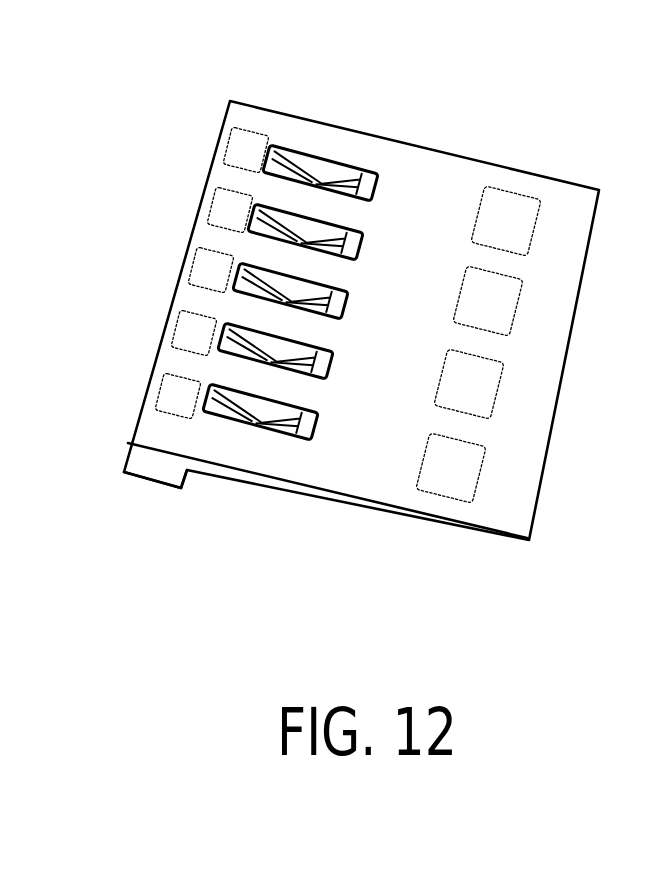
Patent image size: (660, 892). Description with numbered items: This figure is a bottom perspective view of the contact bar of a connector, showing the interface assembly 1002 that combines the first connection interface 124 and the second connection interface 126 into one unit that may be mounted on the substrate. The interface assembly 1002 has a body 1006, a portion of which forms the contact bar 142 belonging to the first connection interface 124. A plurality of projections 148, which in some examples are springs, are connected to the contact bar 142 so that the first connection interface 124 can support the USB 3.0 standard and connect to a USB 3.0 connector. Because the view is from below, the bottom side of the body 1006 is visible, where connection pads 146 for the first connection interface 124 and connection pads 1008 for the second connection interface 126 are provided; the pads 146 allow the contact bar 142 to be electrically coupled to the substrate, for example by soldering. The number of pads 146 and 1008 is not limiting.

The first connection interface 124 is at (124, 280).
The second connection interface 126 is at (537, 127).
The interface assembly 1002 is at (247, 118).
The body 1006 is at (243, 484).
The contact bar 142 is at (170, 482).
The connection pads 146 is at (237, 152).
The projections 148 is at (322, 173).
The connection pads 1008 is at (507, 297).